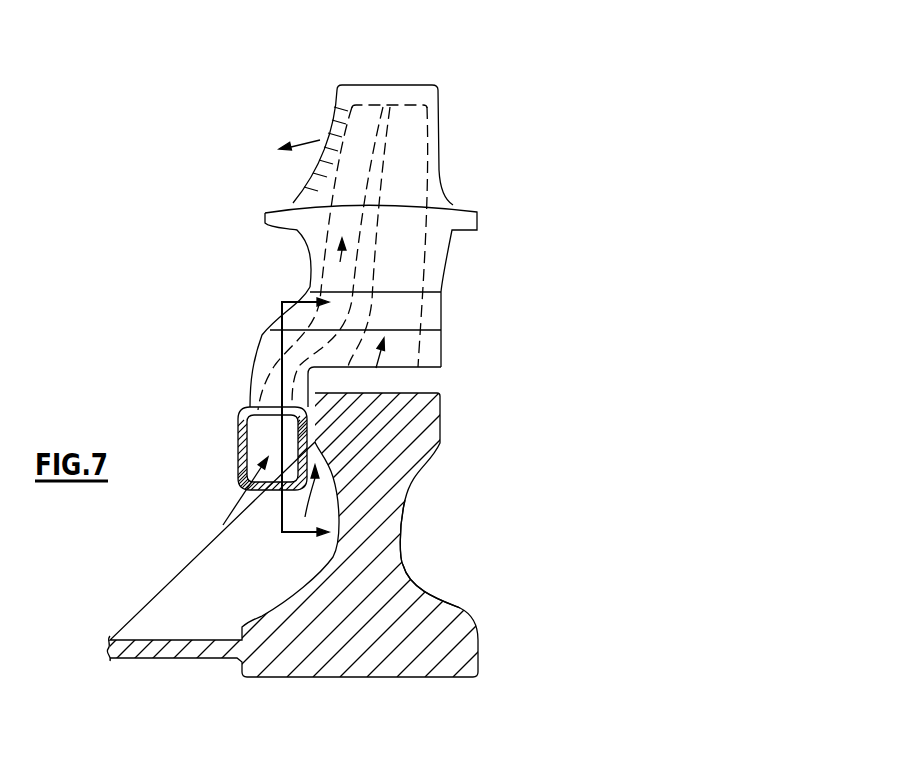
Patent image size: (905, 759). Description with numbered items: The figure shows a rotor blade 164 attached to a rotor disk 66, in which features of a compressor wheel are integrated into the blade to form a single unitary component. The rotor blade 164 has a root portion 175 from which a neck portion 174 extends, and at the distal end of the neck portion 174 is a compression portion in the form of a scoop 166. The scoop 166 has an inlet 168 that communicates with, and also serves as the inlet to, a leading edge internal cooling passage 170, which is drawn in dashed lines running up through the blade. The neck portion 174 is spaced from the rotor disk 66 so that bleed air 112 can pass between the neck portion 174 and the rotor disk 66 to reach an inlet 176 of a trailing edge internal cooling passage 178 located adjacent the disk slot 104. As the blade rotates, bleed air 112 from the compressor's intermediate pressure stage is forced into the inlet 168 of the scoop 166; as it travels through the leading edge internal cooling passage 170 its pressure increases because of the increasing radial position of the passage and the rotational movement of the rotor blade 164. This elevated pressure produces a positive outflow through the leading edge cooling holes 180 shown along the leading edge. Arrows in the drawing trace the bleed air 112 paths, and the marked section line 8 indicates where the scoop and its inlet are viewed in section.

The rotor blade 164 is at (478, 97).
The leading edge cooling holes 180 is at (330, 117).
The trailing edge internal cooling passage 178 is at (422, 227).
The root portion 175 is at (441, 313).
The inlet to trailing edge internal cooling passage 176 is at (410, 370).
The neck portion 174 is at (235, 345).
The leading edge internal cooling passage 170 is at (269, 370).
The scoop 166 is at (246, 407).
The inlet 168 is at (250, 447).
The disk slot 104 is at (455, 405).
The rotor disk 66 is at (409, 497).
The bleed air 112 is at (280, 143).
The section line for FIG. 8 is at (297, 414).